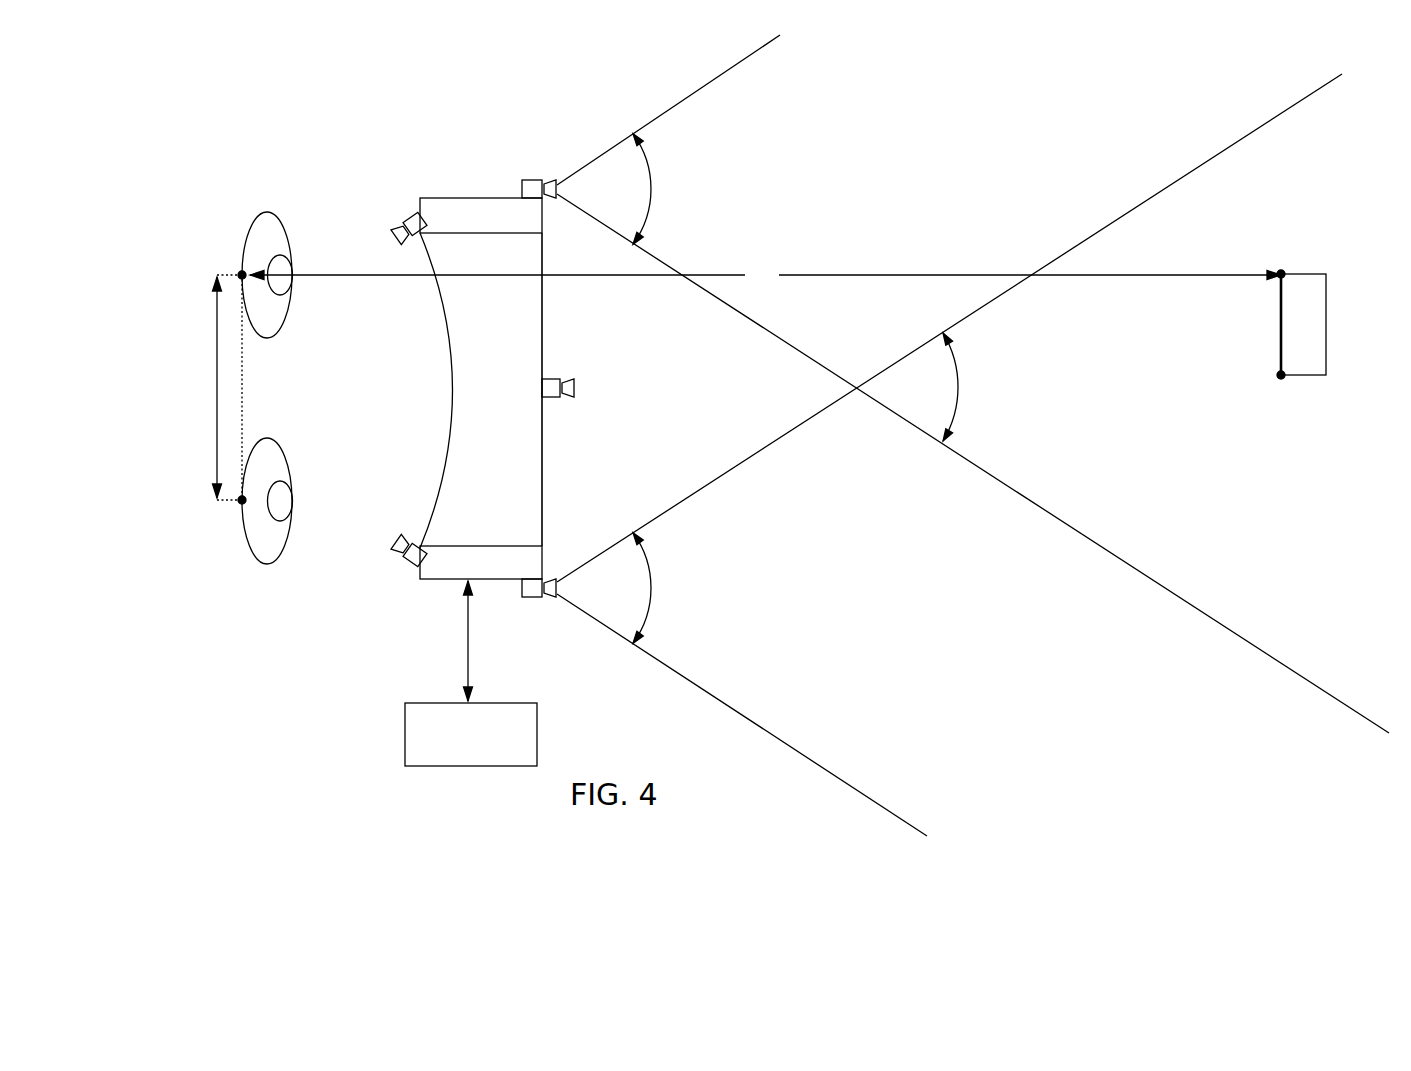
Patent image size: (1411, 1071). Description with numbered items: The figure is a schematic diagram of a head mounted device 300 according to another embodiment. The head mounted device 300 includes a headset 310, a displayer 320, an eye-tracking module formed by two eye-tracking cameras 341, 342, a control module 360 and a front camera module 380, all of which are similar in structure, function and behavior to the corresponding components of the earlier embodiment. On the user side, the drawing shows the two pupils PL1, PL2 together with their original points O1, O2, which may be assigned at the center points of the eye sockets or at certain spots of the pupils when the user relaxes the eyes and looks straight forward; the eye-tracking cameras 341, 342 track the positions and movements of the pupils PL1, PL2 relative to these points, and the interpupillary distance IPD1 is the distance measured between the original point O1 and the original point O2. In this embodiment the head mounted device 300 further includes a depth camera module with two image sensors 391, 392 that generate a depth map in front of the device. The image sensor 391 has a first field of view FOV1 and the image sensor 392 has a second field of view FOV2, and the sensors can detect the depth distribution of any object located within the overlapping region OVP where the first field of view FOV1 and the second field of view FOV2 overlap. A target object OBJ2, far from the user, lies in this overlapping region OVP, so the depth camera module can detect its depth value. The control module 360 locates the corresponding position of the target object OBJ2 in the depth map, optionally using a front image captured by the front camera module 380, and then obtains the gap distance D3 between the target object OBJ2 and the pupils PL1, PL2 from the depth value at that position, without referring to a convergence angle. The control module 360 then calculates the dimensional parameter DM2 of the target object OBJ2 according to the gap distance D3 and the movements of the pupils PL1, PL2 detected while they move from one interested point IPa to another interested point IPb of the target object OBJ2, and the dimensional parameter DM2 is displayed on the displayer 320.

The head mounted device 300 is at (228, 88).
The headset 310 is at (457, 197).
The displayer 320 is at (452, 392).
The eye-tracking camera 341 is at (412, 212).
The eye-tracking camera 342 is at (408, 566).
The control module 360 is at (538, 735).
The front camera module 380 is at (555, 398).
The image sensor 391 is at (537, 179).
The image sensor 392 is at (531, 598).
The original point O1 is at (240, 274).
The original point O2 is at (240, 502).
The pupil PL1 is at (284, 258).
The pupil PL2 is at (287, 486).
The interpupillary distance IPD1 is at (215, 388).
The gap distance D3 is at (765, 275).
The first field of view FOV1 is at (973, 384).
The second field of view FOV2 is at (949, 455).
The overlapping region OVP is at (972, 387).
The target object OBJ2 is at (1327, 325).
The dimensional parameter DM2 is at (1279, 320).
The interested point IPa is at (1283, 273).
The interested point IPb is at (1281, 378).